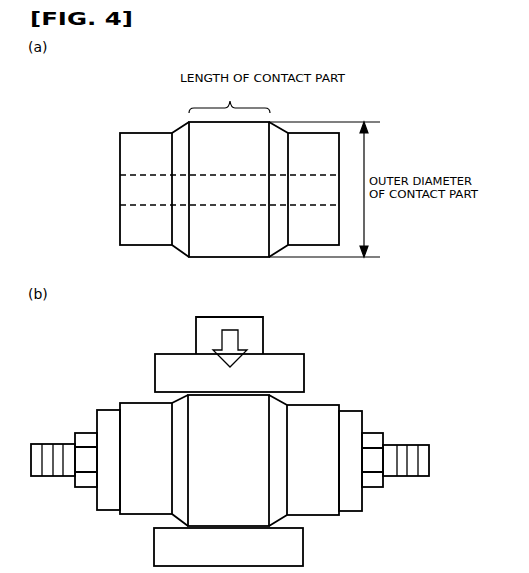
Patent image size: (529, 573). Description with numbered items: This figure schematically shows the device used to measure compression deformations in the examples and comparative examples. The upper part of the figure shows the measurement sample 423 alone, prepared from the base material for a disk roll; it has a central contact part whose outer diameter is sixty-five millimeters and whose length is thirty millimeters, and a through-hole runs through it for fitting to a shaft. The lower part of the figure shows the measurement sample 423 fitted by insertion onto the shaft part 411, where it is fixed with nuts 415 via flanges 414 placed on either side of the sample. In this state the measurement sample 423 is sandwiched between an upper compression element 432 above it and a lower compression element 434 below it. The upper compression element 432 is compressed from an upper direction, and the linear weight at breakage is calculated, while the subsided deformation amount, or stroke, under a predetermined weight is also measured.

The shaft part 411 is at (412, 444).
The flange 414 is at (118, 403).
The nut 415 is at (98, 408).
The measurement sample 423 is at (147, 115).
The upper compression element 432 is at (165, 354).
The lower compression element 434 is at (303, 548).